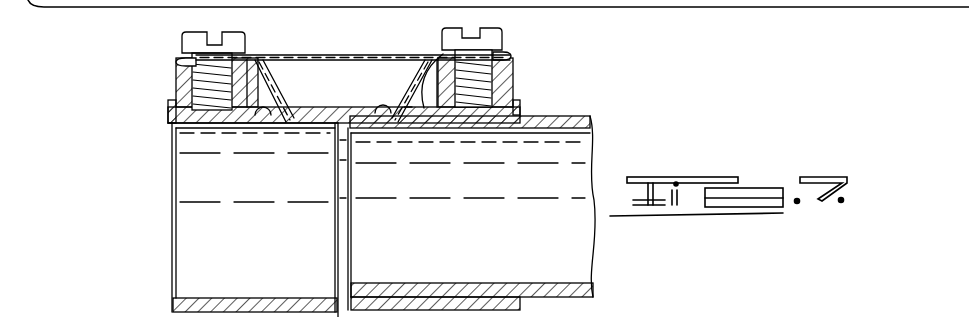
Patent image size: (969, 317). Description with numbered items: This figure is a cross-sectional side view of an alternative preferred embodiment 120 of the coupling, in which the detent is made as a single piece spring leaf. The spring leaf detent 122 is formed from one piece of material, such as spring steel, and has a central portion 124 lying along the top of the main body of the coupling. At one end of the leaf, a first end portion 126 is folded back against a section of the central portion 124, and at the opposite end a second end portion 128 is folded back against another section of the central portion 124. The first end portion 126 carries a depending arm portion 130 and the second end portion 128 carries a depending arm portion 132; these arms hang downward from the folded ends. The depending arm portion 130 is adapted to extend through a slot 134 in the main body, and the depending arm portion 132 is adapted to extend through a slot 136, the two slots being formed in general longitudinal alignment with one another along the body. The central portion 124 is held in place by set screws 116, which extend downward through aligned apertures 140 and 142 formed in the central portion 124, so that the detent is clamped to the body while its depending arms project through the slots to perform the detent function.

The set screw 116 is at (183, 45).
The alternative preferred embodiment 120 is at (626, 129).
The spring leaf detent 122 is at (346, 44).
The central portion 124 is at (332, 75).
The first end portion 126 is at (178, 68).
The second end portion 128 is at (508, 56).
The depending arm portion 130 is at (281, 125).
The depending arm portion 132 is at (412, 110).
The slot 134 is at (262, 127).
The slot 136 is at (387, 110).
The aperture 140 is at (196, 90).
The aperture 142 is at (492, 80).